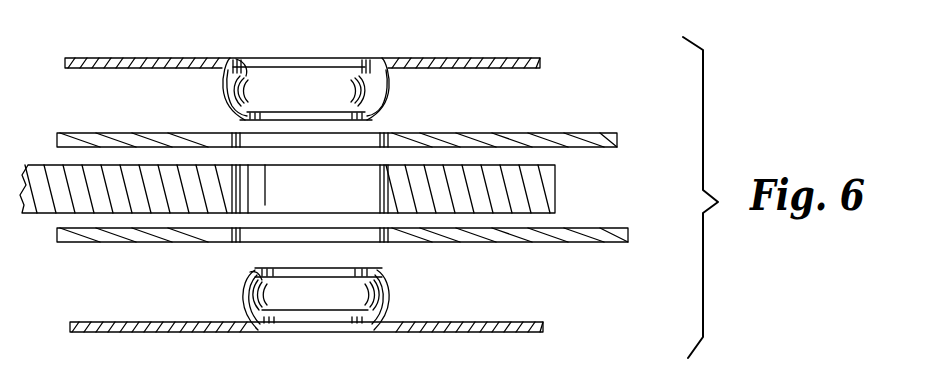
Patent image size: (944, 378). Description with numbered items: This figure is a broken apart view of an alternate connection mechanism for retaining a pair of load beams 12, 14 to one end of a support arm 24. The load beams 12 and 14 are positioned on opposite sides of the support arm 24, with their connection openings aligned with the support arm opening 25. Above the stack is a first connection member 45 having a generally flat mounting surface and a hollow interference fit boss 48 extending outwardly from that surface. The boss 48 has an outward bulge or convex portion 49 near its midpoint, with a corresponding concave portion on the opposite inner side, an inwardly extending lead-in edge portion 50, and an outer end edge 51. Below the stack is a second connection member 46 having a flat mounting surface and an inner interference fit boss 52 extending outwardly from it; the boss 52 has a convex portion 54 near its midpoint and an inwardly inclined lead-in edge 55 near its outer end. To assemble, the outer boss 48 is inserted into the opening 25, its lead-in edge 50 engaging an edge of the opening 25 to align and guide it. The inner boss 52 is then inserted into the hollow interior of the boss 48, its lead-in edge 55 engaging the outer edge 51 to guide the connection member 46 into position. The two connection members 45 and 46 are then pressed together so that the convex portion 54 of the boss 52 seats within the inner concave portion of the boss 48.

The load beam 12 is at (553, 133).
The load beam 14 is at (600, 229).
The support arm 24 is at (549, 183).
The support arm opening 25 is at (383, 181).
The first connection member 45 is at (462, 57).
The second connection member 46 is at (485, 327).
The hollow interference fit boss 48 is at (298, 63).
The convex portion 49 is at (226, 97).
The lead-in edge portion 50 is at (388, 118).
The outer end edge 51 is at (261, 97).
The inner interference fit boss 52 is at (307, 291).
The convex portion 54 is at (246, 297).
The lead-in edge 55 is at (248, 276).